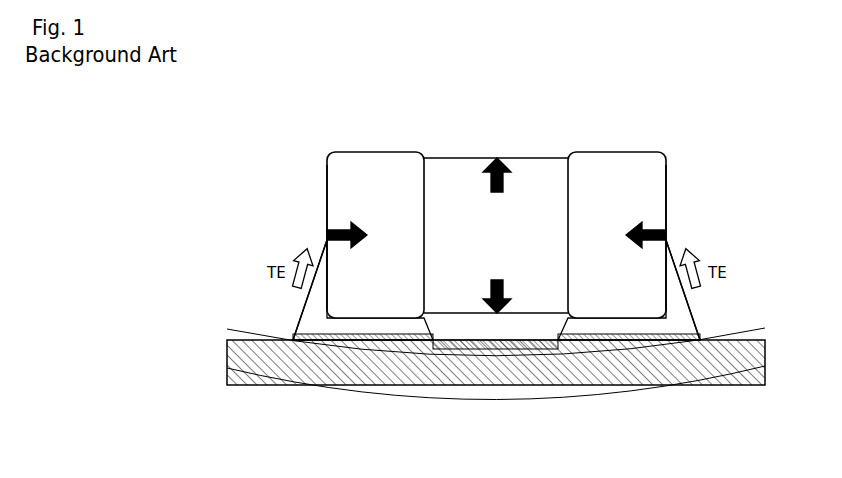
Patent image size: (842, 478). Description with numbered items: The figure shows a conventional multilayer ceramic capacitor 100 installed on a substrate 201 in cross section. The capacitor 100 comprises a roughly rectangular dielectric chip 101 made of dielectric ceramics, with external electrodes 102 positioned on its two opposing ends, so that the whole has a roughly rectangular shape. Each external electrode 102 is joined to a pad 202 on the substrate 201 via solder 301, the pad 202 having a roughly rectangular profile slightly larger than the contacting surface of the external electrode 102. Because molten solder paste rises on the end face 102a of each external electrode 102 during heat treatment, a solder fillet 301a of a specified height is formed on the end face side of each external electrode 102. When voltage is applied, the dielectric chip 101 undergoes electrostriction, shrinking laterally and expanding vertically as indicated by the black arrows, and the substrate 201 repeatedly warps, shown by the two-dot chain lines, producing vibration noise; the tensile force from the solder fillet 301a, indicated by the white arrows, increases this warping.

The multilayer ceramic capacitor 100 is at (496, 210).
The dielectric chip 101 is at (478, 158).
The external electrode 102 is at (373, 152).
The end face 102a is at (327, 203).
The substrate 201 is at (250, 385).
The pad 202 is at (370, 390).
The solder 301 is at (408, 345).
The solder fillet 301a is at (308, 292).